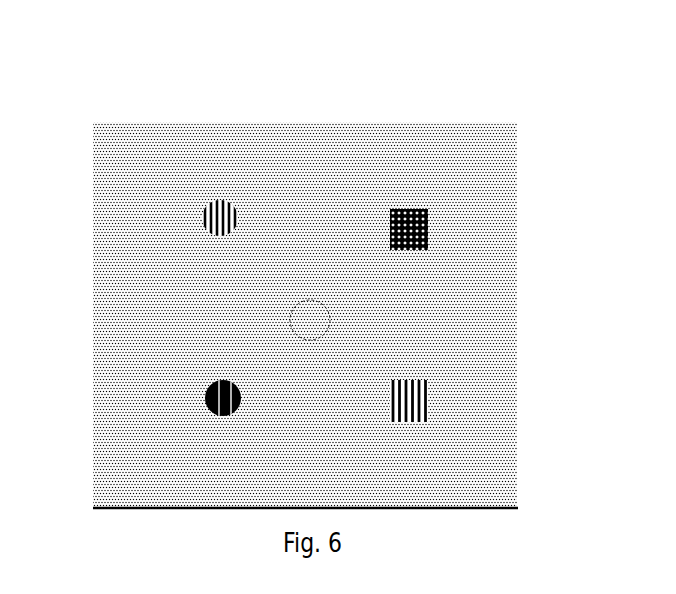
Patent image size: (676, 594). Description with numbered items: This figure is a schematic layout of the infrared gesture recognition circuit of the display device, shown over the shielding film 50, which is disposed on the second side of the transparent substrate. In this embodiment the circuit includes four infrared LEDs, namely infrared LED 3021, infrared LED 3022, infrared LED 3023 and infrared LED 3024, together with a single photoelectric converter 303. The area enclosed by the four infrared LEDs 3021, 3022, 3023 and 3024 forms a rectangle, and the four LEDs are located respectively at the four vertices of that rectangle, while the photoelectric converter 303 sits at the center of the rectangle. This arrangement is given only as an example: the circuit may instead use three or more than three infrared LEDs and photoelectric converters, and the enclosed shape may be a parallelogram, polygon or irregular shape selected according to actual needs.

The shielding film 50 is at (302, 121).
The infrared LED 3024 is at (233, 205).
The infrared LED 3021 is at (430, 214).
The photoelectric converter 303 is at (291, 320).
The infrared LED 3022 is at (205, 401).
The infrared LED 3023 is at (430, 390).